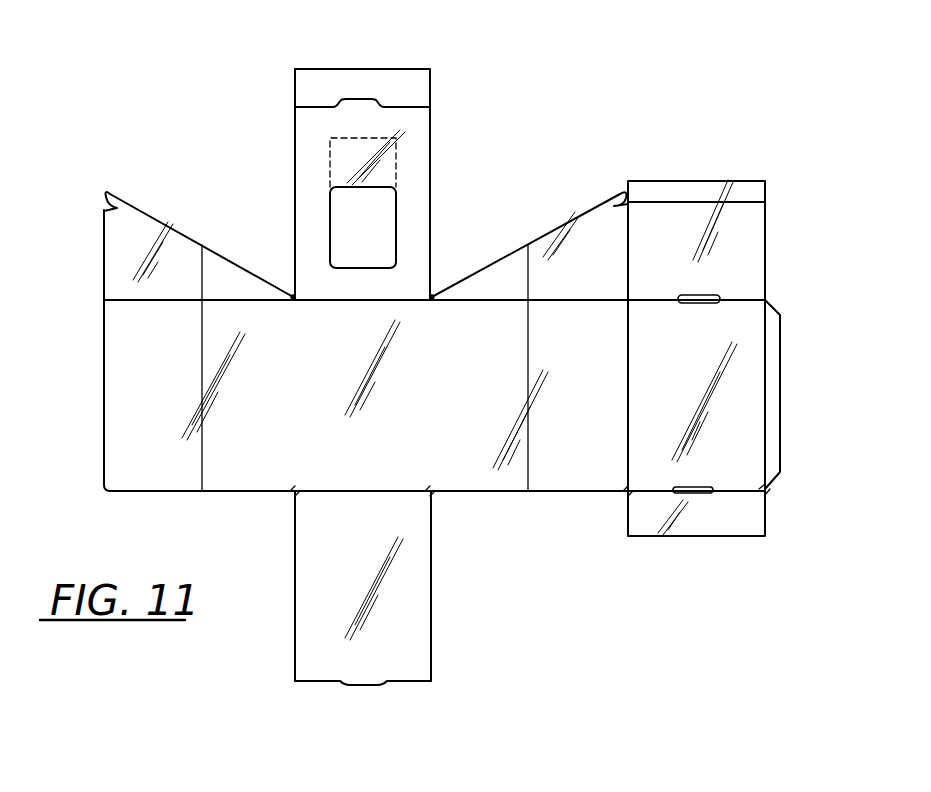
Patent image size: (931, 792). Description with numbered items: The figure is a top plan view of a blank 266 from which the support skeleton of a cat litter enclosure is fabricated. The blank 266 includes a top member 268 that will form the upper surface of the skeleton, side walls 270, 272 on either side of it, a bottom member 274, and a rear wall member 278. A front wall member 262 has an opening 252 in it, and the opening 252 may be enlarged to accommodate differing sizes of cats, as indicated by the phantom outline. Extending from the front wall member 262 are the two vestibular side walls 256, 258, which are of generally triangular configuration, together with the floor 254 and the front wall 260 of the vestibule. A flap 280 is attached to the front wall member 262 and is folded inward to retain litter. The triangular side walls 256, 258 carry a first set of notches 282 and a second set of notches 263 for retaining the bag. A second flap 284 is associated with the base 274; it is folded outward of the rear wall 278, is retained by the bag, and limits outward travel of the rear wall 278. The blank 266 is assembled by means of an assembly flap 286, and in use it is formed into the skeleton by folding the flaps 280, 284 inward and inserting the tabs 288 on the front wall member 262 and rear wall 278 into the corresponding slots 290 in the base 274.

The opening 252 is at (387, 236).
The floor 254 is at (684, 291).
The vestibular side wall 256 is at (217, 288).
The vestibular side wall 258 is at (584, 291).
The front wall 260 is at (677, 195).
The front wall member 262 is at (389, 295).
The second set of notches 263 is at (291, 295).
The blank 266 is at (446, 174).
The top member 268 is at (383, 450).
The side wall 270 is at (178, 358).
The side wall 272 is at (597, 448).
The bottom member 274 is at (742, 465).
The rear wall member 278 is at (386, 531).
The flap 280 is at (308, 84).
The first set of notches 282 is at (102, 200).
The second flap 284 is at (745, 517).
The assembly flap 286 is at (776, 390).
The tabs 288 is at (363, 102).
The slots 290 is at (720, 296).